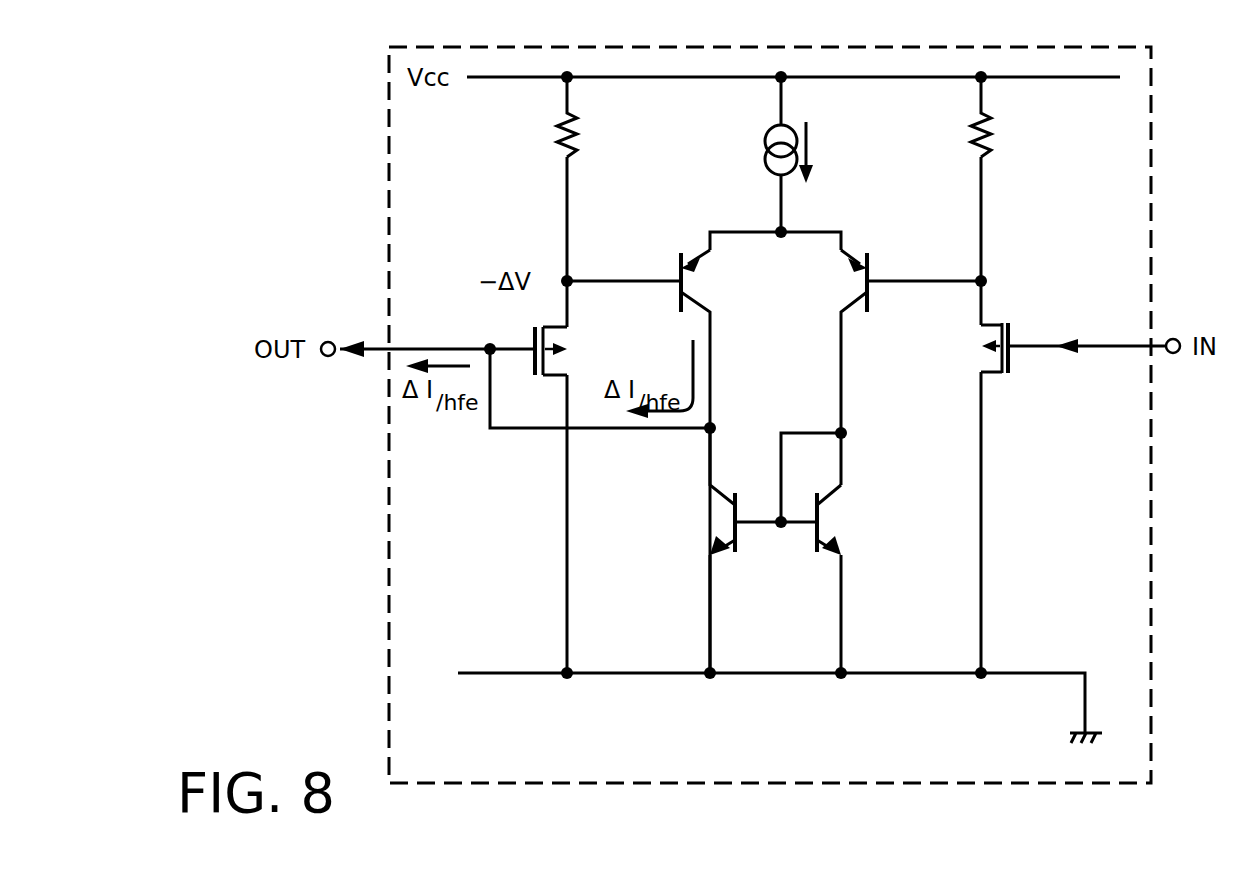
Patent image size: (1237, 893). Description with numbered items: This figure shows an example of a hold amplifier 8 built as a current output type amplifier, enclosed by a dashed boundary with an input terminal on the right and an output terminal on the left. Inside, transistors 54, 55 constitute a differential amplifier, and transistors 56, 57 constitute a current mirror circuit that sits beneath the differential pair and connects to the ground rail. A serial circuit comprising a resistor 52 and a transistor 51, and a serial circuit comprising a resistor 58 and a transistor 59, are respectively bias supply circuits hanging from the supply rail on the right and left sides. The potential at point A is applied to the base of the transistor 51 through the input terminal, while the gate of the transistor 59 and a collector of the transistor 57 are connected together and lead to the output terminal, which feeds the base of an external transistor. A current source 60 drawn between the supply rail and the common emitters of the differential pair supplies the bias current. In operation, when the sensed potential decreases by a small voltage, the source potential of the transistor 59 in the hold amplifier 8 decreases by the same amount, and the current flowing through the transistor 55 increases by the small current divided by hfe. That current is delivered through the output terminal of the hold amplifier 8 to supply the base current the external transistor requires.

The hold amplifier 8 is at (799, 47).
The transistor 51 is at (1018, 337).
The resistor 52 is at (996, 140).
The transistor 54 is at (853, 290).
The transistor 55 is at (693, 290).
The transistor 56 is at (836, 527).
The transistor 57 is at (720, 526).
The resistor 58 is at (553, 142).
The transistor 59 is at (578, 352).
The bias current source 60 is at (765, 143).